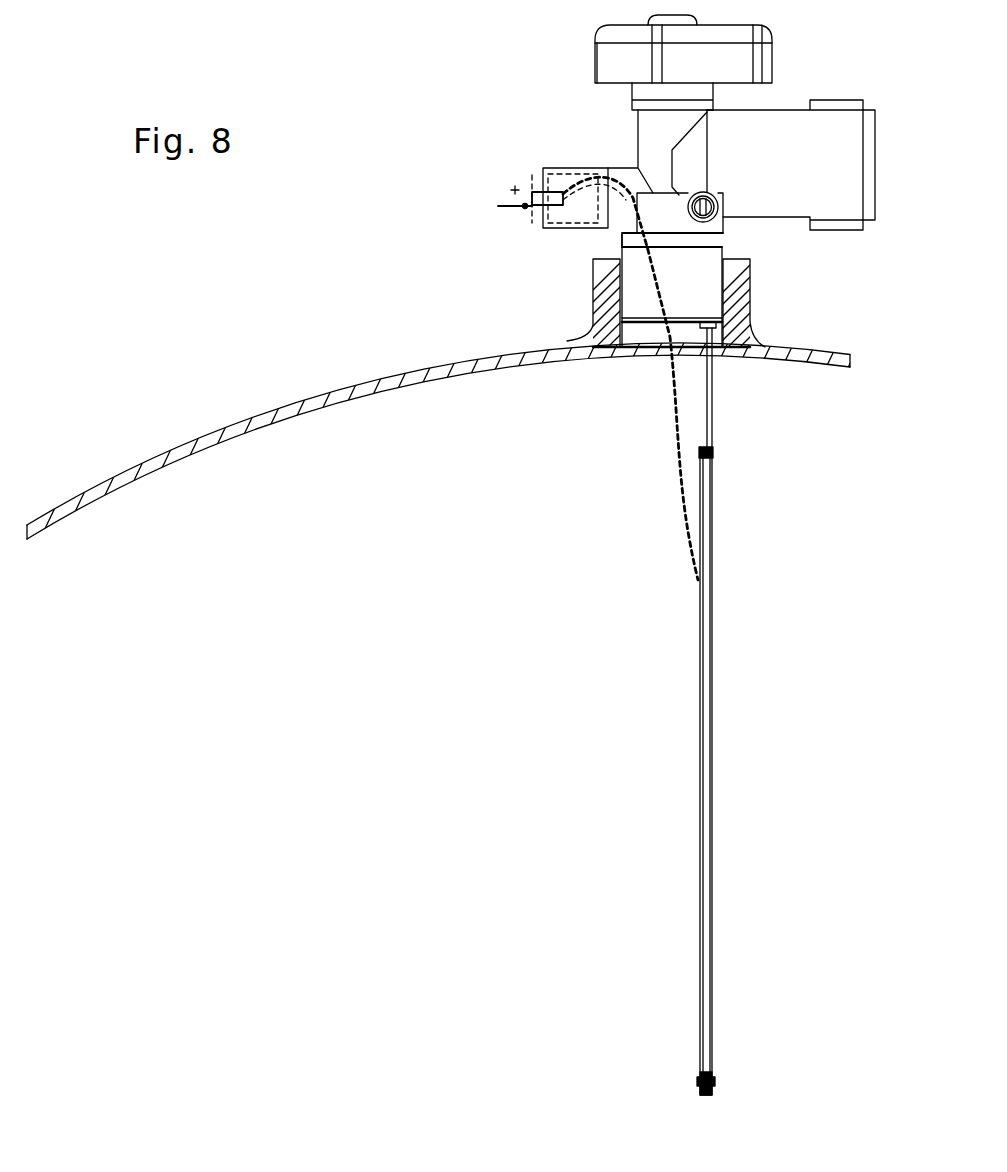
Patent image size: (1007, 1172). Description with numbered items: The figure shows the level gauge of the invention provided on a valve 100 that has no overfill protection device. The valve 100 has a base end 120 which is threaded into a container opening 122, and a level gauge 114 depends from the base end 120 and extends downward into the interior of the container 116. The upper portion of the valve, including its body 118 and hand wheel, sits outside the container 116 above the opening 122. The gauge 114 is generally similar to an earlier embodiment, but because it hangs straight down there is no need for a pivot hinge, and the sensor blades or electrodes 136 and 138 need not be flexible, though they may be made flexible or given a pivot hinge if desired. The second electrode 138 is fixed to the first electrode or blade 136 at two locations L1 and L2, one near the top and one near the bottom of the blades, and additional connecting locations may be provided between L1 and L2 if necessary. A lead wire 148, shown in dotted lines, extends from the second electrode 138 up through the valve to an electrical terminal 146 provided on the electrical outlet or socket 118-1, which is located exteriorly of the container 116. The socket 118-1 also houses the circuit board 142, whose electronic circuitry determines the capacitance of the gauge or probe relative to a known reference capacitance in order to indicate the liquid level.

The valve 100 is at (590, 142).
The level gauge 114 is at (761, 708).
The container 116 is at (325, 390).
The valve body 118 is at (770, 140).
The electrical outlet or socket 118-1 is at (560, 227).
The base end 120 is at (700, 290).
The container opening 122 is at (648, 332).
The first electrode or blade 136 is at (713, 842).
The second electrode 138 is at (705, 845).
The circuit board 142 is at (533, 175).
The electrical terminal 146 is at (538, 197).
The lead wire 148 is at (680, 477).
The fixing location L1 is at (713, 452).
The fixing location L2 is at (716, 1082).